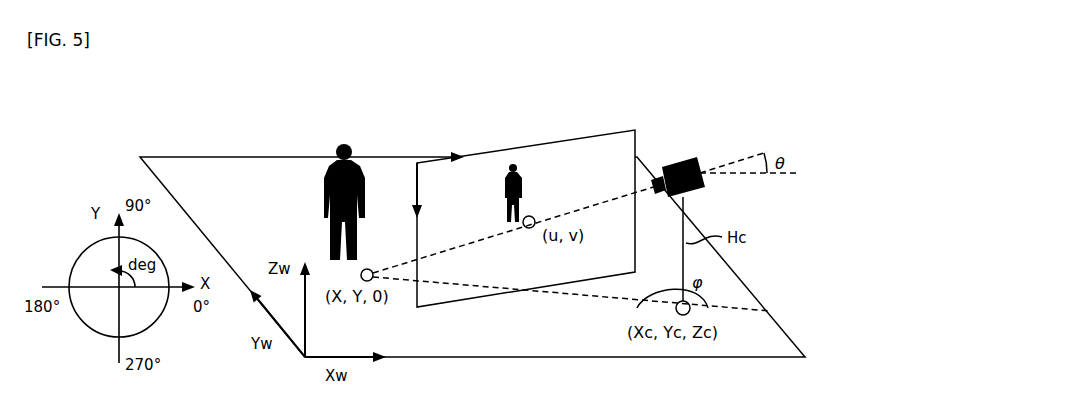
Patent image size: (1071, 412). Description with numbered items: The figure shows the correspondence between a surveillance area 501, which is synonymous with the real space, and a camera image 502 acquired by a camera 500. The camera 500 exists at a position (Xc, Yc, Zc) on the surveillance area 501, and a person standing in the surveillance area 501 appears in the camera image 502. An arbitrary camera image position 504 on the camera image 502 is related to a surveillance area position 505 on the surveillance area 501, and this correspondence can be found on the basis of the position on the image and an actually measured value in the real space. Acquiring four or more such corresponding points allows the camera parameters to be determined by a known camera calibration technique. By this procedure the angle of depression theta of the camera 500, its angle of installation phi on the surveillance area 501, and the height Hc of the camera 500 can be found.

The camera 500 is at (678, 158).
The surveillance area 501 is at (218, 156).
The camera image 502 is at (605, 132).
The camera image position 504 is at (534, 217).
The surveillance area position 505 is at (372, 268).